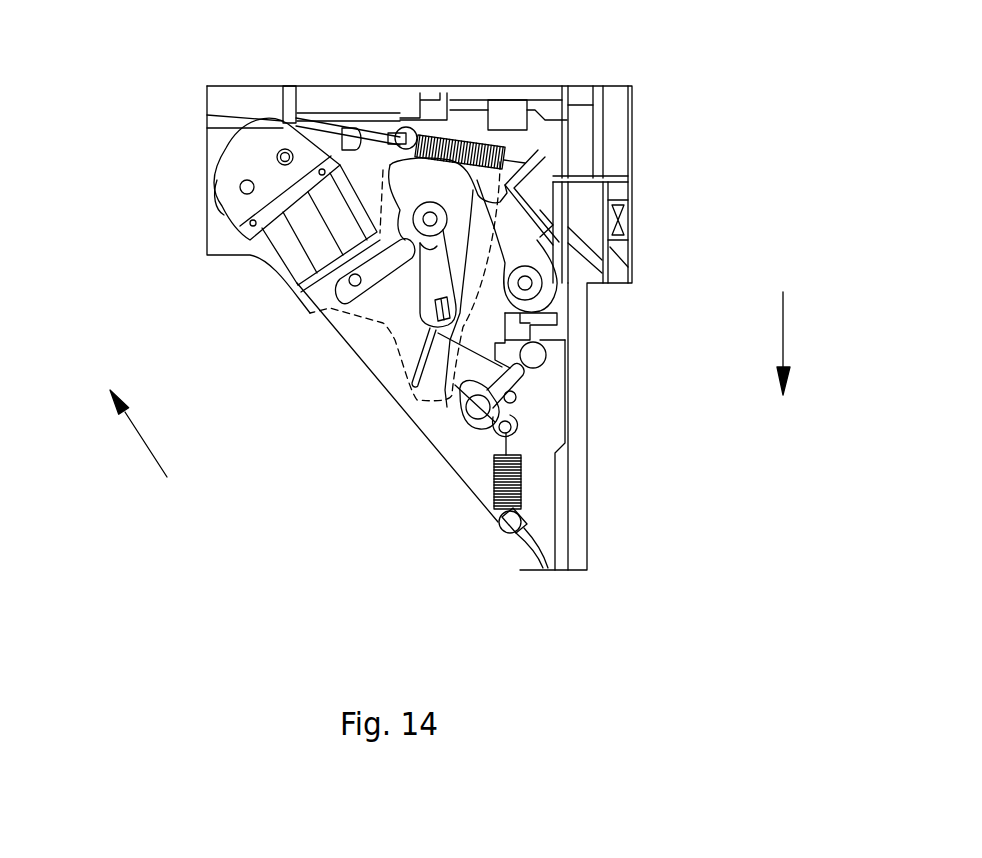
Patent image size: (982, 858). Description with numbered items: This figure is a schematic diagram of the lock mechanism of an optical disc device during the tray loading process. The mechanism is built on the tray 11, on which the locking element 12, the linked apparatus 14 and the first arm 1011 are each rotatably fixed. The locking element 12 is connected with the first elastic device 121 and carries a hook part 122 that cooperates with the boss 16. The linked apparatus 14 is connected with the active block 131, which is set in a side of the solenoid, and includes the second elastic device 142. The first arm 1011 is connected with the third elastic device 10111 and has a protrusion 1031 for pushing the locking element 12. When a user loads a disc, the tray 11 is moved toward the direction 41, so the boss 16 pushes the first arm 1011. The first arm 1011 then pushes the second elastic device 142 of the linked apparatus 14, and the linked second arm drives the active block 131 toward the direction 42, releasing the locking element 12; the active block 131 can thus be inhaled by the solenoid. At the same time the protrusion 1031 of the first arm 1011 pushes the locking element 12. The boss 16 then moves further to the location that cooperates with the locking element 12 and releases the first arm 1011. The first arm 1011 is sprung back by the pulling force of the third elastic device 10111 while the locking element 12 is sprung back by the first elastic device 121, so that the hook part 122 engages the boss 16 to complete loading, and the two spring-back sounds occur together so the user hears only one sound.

The tray 11 is at (577, 518).
The locking element 12 is at (230, 197).
The first elastic device 121 is at (457, 132).
The hook part 122 is at (540, 392).
The active block 131 is at (312, 305).
The linked apparatus 14 is at (408, 352).
The second elastic device 142 is at (418, 410).
The boss 16 is at (540, 350).
The first arm 1011 is at (470, 422).
The third elastic device 10111 is at (497, 527).
The protrusion 1031 is at (540, 427).
The direction 41 is at (783, 332).
The direction 42 is at (143, 441).